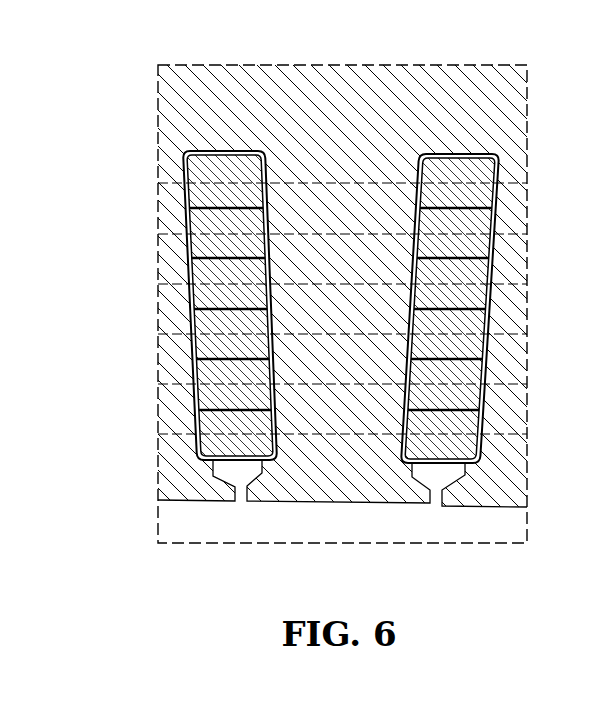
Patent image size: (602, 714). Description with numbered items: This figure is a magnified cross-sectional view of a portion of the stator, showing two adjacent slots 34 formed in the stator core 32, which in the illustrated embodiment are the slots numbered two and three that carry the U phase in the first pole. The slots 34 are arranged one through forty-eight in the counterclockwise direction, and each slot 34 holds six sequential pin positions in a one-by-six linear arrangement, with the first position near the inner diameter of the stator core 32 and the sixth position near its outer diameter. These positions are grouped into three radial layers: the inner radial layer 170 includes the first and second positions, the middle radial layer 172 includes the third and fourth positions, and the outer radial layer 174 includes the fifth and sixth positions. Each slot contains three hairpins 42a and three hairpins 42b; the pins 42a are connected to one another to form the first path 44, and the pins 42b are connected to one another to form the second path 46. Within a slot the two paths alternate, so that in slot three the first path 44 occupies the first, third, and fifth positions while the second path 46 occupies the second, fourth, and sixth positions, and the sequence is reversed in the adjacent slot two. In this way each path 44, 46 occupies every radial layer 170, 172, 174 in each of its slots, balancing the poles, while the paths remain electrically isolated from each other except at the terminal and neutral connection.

The stator core 32 is at (483, 92).
The slots 34 is at (452, 515).
The pins 42a is at (252, 325).
The pins 42b is at (233, 168).
The first path 44 is at (234, 455).
The second path 46 is at (213, 383).
The inner radial layer 170 is at (135, 358).
The middle radial layer 172 is at (115, 258).
The outer radial layer 174 is at (135, 155).